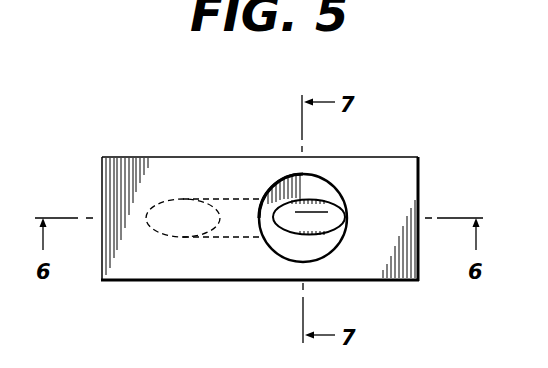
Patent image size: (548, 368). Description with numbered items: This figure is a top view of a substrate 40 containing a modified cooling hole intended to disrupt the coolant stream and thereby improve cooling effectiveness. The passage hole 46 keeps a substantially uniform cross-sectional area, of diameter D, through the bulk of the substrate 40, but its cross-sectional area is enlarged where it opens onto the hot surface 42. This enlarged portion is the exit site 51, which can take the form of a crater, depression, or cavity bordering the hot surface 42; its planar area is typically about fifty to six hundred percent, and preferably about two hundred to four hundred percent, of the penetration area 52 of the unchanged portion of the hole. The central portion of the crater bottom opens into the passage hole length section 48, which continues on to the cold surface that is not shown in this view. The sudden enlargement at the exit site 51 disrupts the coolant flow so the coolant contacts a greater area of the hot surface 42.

The substrate 40 is at (125, 127).
The hot surface 42 is at (388, 172).
The passage hole 46 is at (337, 194).
The passage hole length section 48 is at (237, 228).
The exit site 51 is at (317, 248).
The penetration area 52 is at (327, 213).